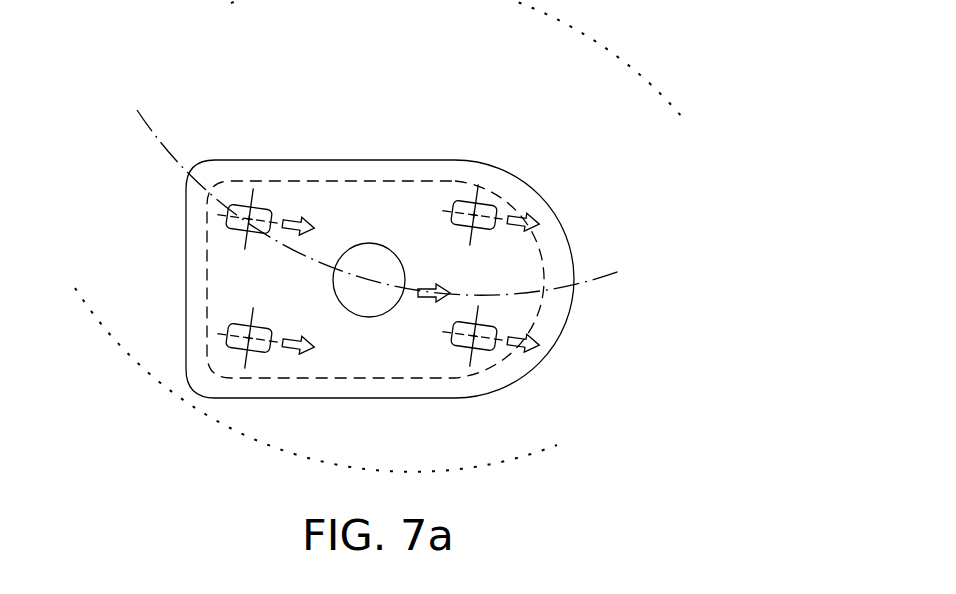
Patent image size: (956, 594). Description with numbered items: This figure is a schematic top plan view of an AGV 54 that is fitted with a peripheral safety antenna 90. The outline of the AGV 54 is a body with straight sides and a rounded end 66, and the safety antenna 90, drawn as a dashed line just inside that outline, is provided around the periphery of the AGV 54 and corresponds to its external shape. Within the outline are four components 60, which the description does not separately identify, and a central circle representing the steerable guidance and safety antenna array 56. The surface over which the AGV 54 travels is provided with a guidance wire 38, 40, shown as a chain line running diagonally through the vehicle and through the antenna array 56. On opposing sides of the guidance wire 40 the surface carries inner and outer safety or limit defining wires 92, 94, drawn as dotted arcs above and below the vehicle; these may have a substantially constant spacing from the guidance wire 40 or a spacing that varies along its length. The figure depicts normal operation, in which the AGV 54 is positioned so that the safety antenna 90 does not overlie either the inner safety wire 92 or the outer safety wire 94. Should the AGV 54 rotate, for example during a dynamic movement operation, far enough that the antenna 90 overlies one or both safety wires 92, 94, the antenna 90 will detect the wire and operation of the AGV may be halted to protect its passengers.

The tyre tread / rolling direction axis 38 is at (352, 202).
The guidance wire 40 is at (167, 151).
The AGV 54 is at (355, 192).
The steerable guidance and safety antenna array 56 is at (394, 307).
The sensor elements 60 is at (273, 212).
The rounded end of housing 66 is at (568, 233).
The peripheral safety antenna 90 is at (287, 183).
The inner safety wire 92 is at (470, 141).
The outer safety wire 94 is at (517, 461).